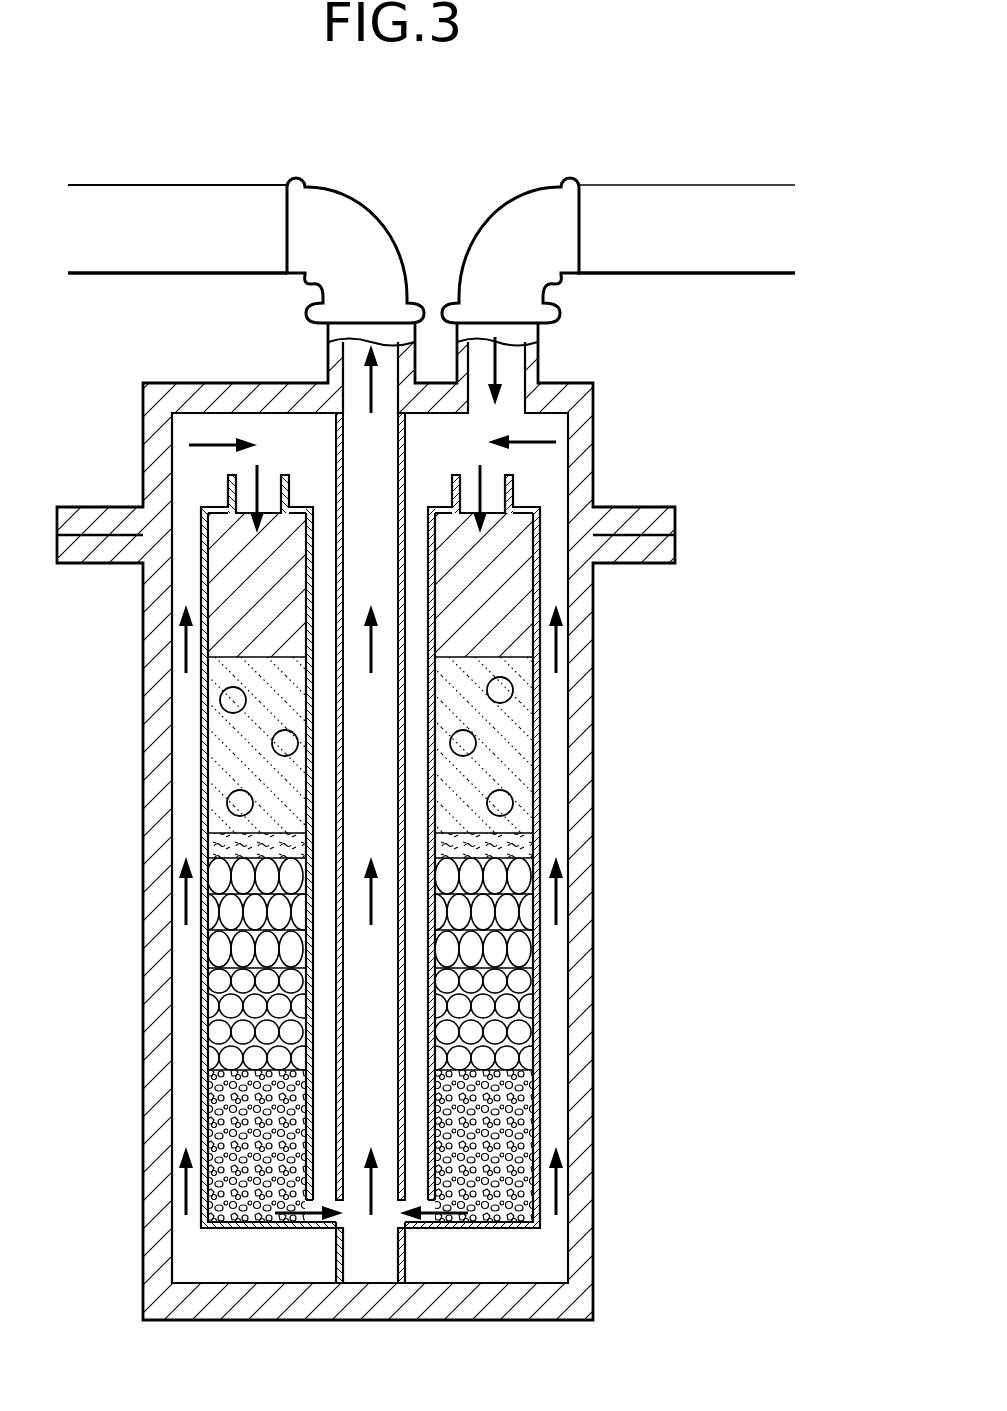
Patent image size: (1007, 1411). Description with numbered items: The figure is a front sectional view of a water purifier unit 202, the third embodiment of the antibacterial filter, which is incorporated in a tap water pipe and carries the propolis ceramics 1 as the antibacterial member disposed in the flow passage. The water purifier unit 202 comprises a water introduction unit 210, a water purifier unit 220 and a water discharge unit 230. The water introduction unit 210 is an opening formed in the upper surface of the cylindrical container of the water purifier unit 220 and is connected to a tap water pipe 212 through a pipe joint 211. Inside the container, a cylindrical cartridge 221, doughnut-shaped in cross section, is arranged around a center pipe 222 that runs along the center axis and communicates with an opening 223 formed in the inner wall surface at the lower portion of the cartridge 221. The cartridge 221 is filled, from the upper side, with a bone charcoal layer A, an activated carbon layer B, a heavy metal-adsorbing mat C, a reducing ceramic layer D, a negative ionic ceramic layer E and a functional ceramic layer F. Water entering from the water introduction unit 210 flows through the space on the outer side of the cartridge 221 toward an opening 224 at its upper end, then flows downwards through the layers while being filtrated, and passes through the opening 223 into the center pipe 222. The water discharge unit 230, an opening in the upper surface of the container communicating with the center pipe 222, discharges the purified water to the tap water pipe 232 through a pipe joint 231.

The propolis ceramics 1 is at (545, 874).
The water purifier unit 202 is at (436, 811).
The water introduction unit 210 is at (512, 380).
The pipe joint 211 is at (518, 218).
The tap water pipe 212 is at (665, 212).
The water purifier unit 220 is at (588, 495).
The cartridge 221 is at (527, 517).
The center pipe 222 is at (337, 428).
The opening 223 is at (407, 1224).
The opening 224 is at (497, 487).
The water discharge unit 230 is at (328, 358).
The pipe joint 231 is at (331, 215).
The tap water pipe 232 is at (178, 210).
The bone charcoal layer A is at (528, 588).
The activated carbon layer B is at (520, 800).
The heavy metal-adsorbing mat C is at (530, 845).
The reducing ceramic layer D is at (518, 950).
The negative ionic ceramic layer E is at (508, 1032).
The functional ceramic layer F is at (513, 1127).